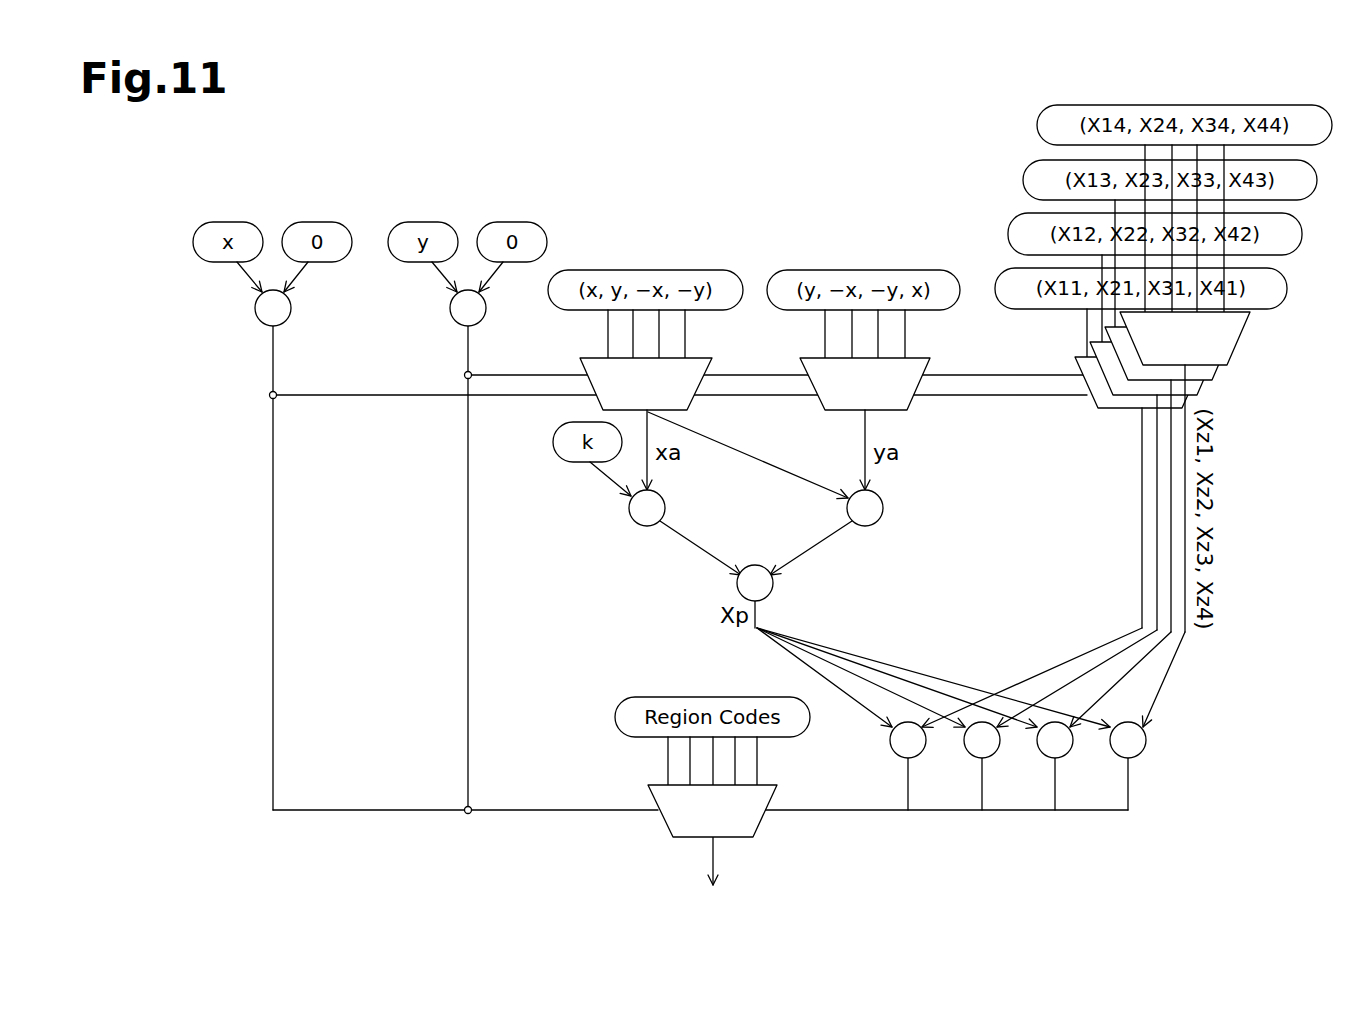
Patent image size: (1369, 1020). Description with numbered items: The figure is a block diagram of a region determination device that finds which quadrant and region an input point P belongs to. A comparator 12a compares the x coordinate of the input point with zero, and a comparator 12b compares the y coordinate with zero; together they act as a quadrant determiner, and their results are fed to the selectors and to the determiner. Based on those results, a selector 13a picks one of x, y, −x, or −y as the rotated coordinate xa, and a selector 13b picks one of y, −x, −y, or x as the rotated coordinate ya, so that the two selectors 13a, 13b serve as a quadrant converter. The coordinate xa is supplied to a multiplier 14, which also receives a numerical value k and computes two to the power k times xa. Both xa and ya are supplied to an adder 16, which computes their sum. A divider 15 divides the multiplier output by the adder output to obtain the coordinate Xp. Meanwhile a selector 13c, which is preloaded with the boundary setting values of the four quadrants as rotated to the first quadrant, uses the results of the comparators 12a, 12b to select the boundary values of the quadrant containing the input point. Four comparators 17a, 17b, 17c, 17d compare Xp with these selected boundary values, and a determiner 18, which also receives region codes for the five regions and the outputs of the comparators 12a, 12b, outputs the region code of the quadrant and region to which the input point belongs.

The comparator 12a is at (291, 308).
The comparator 12b is at (450, 308).
The selector 13a is at (585, 358).
The selector 13b is at (805, 358).
The selector 13c is at (1260, 313).
The multiplier 14 is at (665, 506).
The divider 15 is at (756, 565).
The adder 16 is at (883, 506).
The comparator 17a is at (895, 753).
The comparator 17b is at (968, 755).
The comparator 17c is at (1042, 755).
The comparator 17d is at (1143, 753).
The determiner 18 is at (760, 825).